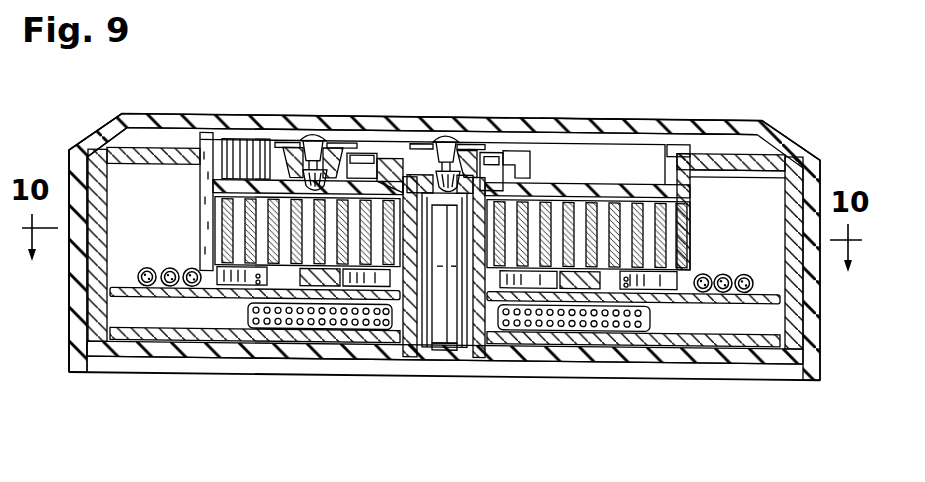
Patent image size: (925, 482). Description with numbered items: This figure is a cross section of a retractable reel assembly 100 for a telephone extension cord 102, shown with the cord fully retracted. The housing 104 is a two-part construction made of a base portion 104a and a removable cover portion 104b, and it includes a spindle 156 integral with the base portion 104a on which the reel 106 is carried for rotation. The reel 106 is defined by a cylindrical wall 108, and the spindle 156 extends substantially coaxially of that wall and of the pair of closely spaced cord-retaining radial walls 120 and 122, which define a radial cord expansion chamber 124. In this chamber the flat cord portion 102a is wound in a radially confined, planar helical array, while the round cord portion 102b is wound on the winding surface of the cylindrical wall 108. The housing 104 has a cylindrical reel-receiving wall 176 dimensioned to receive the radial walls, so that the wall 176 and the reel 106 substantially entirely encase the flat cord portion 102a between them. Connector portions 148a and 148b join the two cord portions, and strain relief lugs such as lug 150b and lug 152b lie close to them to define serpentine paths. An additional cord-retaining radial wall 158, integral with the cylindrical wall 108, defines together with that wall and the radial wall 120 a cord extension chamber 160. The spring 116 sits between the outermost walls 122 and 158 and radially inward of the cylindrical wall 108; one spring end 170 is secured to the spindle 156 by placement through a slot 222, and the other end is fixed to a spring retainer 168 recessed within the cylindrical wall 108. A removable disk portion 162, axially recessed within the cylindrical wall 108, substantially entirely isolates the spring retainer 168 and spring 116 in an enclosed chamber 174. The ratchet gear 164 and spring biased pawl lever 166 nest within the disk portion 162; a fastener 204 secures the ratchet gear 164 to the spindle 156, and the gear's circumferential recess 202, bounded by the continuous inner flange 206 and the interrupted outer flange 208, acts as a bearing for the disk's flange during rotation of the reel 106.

The retractable reel assembly 100 is at (206, 70).
The telephone extension cord 102 is at (745, 265).
The flat cord portion 102a is at (630, 355).
The round cord portion 102b is at (703, 268).
The housing 104 is at (312, 102).
The base portion 104a is at (443, 325).
The cover portion 104b is at (572, 117).
The reel 106 is at (751, 145).
The cylindrical wall 108 is at (725, 150).
The spring 116 is at (602, 182).
The cord-retaining radial wall 120 is at (760, 312).
The cord-retaining radial wall 122 is at (728, 342).
The radial cord expansion chamber 124 is at (683, 320).
The connector portion 148a is at (380, 290).
The connector portion 148b is at (530, 292).
The lug 150b is at (235, 292).
The lug 152b is at (662, 290).
The spindle 156 is at (423, 363).
The additional cord-retaining radial wall 158 is at (143, 156).
The cord extension chamber 160 is at (78, 149).
The removable disk portion 162 is at (250, 148).
The ratchet gear 164 is at (514, 146).
The spring biased pawl lever 166 is at (350, 146).
The spring retainer 168 is at (656, 162).
The spring end 170 is at (462, 300).
The enclosed chamber 174 is at (632, 163).
The cylindrical reel-receiving wall 176 is at (97, 178).
The circumferential recess 202 is at (396, 152).
The fastener 204 is at (441, 136).
The flange 206 is at (422, 160).
The flange 208 is at (386, 150).
The slot 222 is at (448, 320).